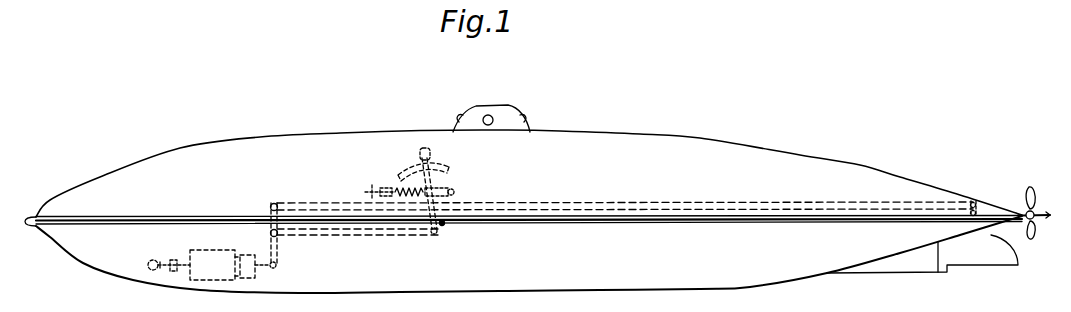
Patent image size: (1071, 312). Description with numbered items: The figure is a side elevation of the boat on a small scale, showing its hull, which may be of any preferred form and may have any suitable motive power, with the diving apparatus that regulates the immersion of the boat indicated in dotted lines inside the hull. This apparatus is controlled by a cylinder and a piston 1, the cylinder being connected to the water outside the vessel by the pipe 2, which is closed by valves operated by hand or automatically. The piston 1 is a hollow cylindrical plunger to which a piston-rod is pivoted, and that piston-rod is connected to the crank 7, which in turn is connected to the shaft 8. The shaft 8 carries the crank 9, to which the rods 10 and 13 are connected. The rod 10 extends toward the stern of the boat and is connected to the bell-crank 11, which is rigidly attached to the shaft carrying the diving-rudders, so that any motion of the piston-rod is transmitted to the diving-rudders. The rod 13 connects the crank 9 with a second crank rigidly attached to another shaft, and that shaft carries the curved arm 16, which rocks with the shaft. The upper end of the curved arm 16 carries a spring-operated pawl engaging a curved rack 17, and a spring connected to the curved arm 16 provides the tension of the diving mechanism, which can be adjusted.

The piston 1 is at (212, 265).
The pipe 2 is at (168, 251).
The crank 7 is at (281, 255).
The shaft 8 is at (269, 234).
The crank 9 is at (270, 212).
The rod 10 is at (677, 202).
The bell-crank 11 is at (976, 205).
The rod 13 is at (383, 237).
The curved arm 16 is at (438, 177).
The curved rack 17 is at (406, 163).